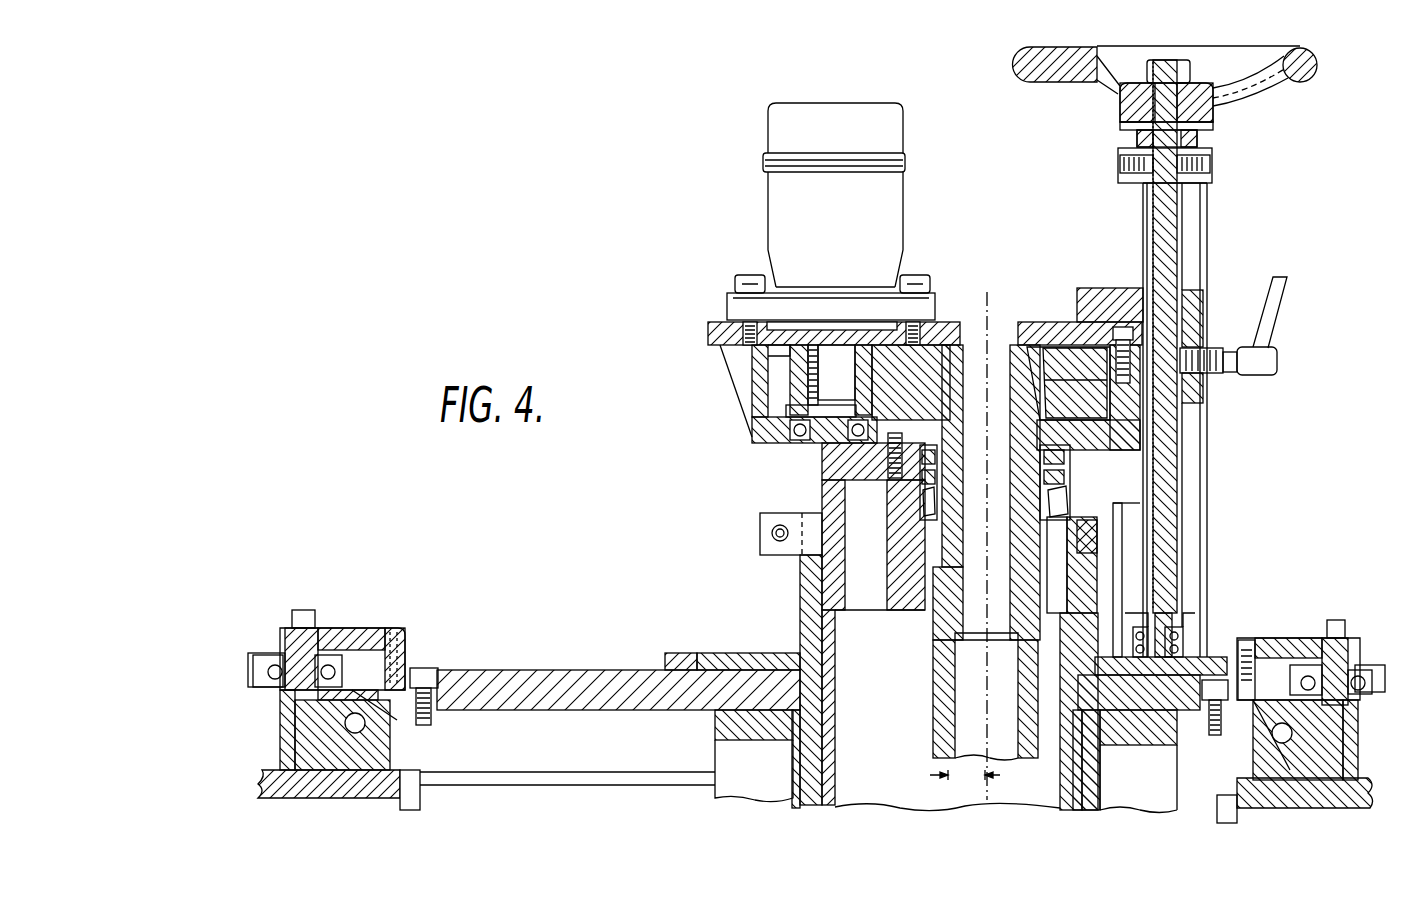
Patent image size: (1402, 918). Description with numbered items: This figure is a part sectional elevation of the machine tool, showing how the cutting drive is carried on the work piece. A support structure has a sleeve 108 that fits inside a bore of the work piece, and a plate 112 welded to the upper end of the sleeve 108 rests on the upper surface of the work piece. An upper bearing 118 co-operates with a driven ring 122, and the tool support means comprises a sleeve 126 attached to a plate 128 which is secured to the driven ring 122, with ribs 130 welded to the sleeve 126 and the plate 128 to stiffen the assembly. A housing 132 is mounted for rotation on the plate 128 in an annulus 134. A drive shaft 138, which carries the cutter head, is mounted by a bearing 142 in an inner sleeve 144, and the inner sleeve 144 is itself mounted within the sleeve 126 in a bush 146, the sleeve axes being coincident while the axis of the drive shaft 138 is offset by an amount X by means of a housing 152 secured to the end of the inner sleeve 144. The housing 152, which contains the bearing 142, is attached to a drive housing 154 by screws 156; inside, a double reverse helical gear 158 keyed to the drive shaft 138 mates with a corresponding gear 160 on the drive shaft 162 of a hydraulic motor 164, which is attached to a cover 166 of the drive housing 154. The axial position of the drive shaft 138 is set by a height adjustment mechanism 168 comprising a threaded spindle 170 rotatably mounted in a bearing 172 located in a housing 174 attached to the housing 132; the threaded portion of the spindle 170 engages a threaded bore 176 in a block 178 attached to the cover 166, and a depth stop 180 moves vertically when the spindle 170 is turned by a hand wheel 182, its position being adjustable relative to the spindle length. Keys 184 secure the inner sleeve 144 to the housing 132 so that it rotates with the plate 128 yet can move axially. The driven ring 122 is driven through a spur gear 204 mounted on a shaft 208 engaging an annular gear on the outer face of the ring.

The sleeve 108 is at (420, 800).
The plate 112 is at (266, 788).
The upper bearing 118 is at (365, 735).
The driven ring 122 is at (403, 718).
The sleeve 126 is at (790, 806).
The plate 128 is at (548, 668).
The ribs 130 is at (720, 748).
The housing 132 is at (740, 653).
The annulus 134 is at (680, 653).
The drive shaft 138 is at (935, 748).
The bearing 142 is at (1117, 523).
The inner sleeve 144 is at (830, 755).
The bush 146 is at (792, 792).
The housing 152 is at (1083, 487).
The drive housing 154 is at (757, 408).
The screws 156 is at (880, 455).
The double reverse helical gear 158 is at (1040, 348).
The gear 160 is at (790, 378).
The drive shaft 162 is at (790, 412).
The hydraulic motor 164 is at (883, 200).
The cover 166 is at (947, 322).
The height adjustment mechanism 168 is at (1232, 284).
The threaded spindle 170 is at (1192, 220).
The bearing 172 is at (1197, 642).
The housing 174 is at (1180, 612).
The threaded bore 176 is at (1205, 316).
The block 178 is at (1100, 288).
The depth stop 180 is at (1205, 398).
The hand wheel 182 is at (1300, 72).
The keys 184 is at (285, 730).
The spur gear 204 is at (252, 675).
The shaft 208 is at (285, 640).